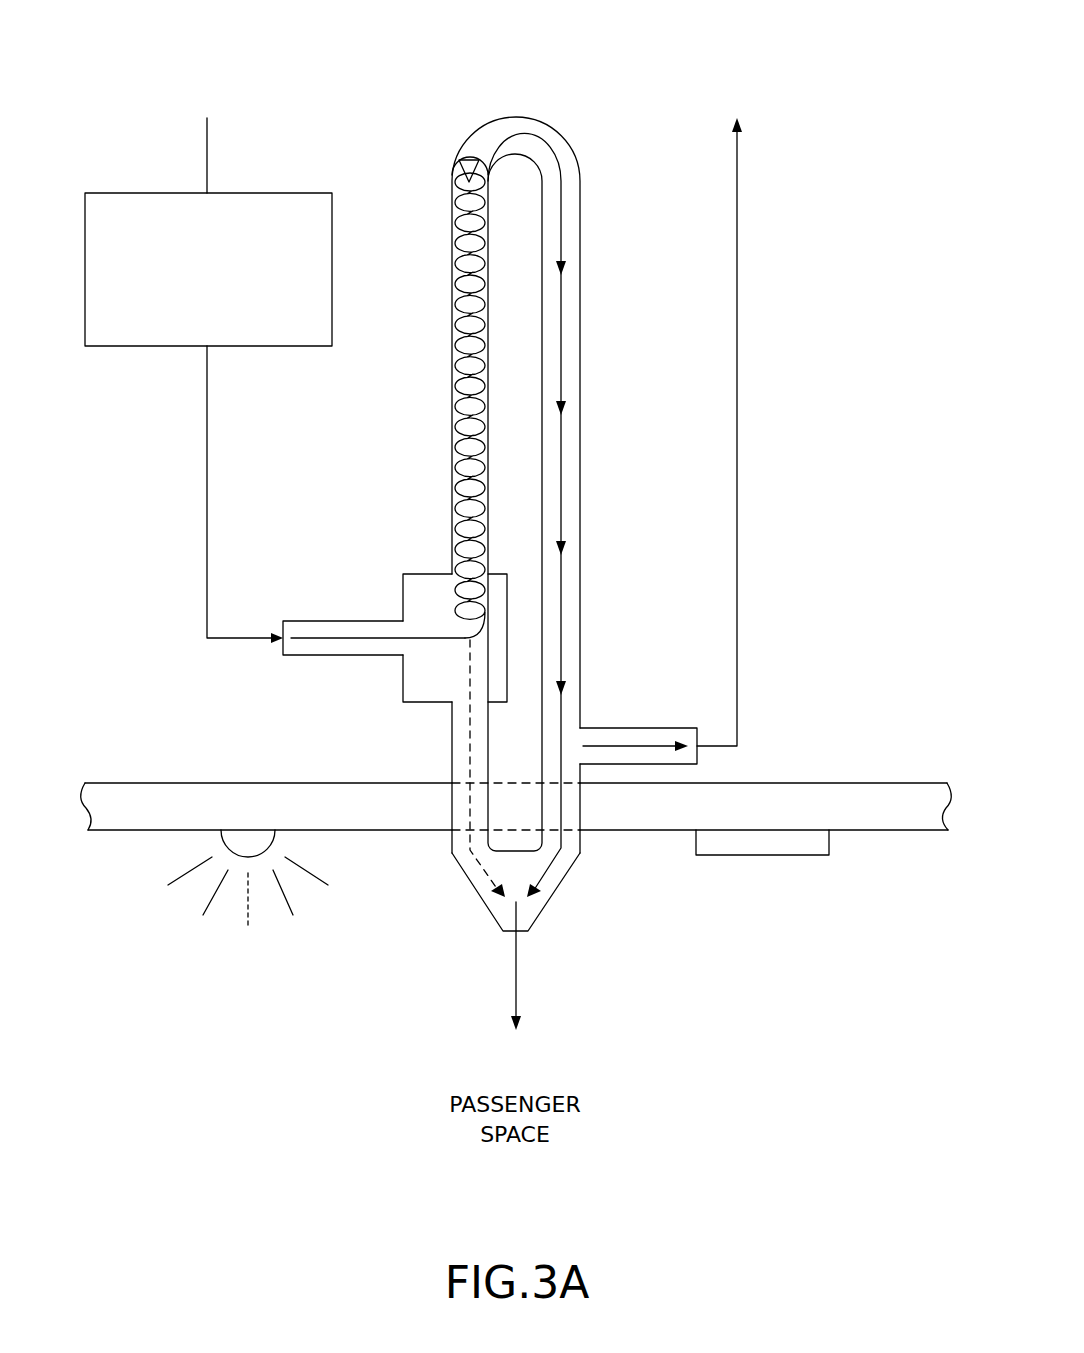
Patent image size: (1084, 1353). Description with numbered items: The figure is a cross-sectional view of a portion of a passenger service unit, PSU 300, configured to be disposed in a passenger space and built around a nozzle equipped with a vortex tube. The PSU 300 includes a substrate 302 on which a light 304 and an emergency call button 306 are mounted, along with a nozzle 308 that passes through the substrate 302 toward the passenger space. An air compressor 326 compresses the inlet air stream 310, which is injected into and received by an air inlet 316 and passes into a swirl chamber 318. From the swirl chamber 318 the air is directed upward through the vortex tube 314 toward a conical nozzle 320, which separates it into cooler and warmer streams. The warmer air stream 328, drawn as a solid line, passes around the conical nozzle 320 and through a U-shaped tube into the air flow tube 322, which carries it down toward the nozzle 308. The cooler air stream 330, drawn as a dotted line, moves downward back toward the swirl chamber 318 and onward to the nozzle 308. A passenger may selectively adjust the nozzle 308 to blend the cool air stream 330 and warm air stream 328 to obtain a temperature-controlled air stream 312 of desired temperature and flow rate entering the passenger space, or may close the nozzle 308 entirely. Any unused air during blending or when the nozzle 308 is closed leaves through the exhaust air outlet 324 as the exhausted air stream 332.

The PSU 300 is at (836, 65).
The substrate 302 is at (135, 782).
The light 304 is at (223, 840).
The emergency call button 306 is at (759, 855).
The nozzle 308 is at (555, 893).
The inlet air stream 310 is at (206, 478).
The temperature-controlled air stream 312 is at (516, 973).
The vortex tube 314 is at (451, 368).
The air inlet 316 is at (350, 618).
The swirl chamber 318 is at (428, 593).
The conical nozzle 320 is at (469, 160).
The air flow tube 322 is at (581, 237).
The exhaust air outlet 324 is at (632, 727).
The air compressor 326 is at (208, 269).
The warmer air stream 328 is at (562, 358).
The cooler air stream 330 is at (470, 733).
The exhausted air stream 332 is at (738, 425).